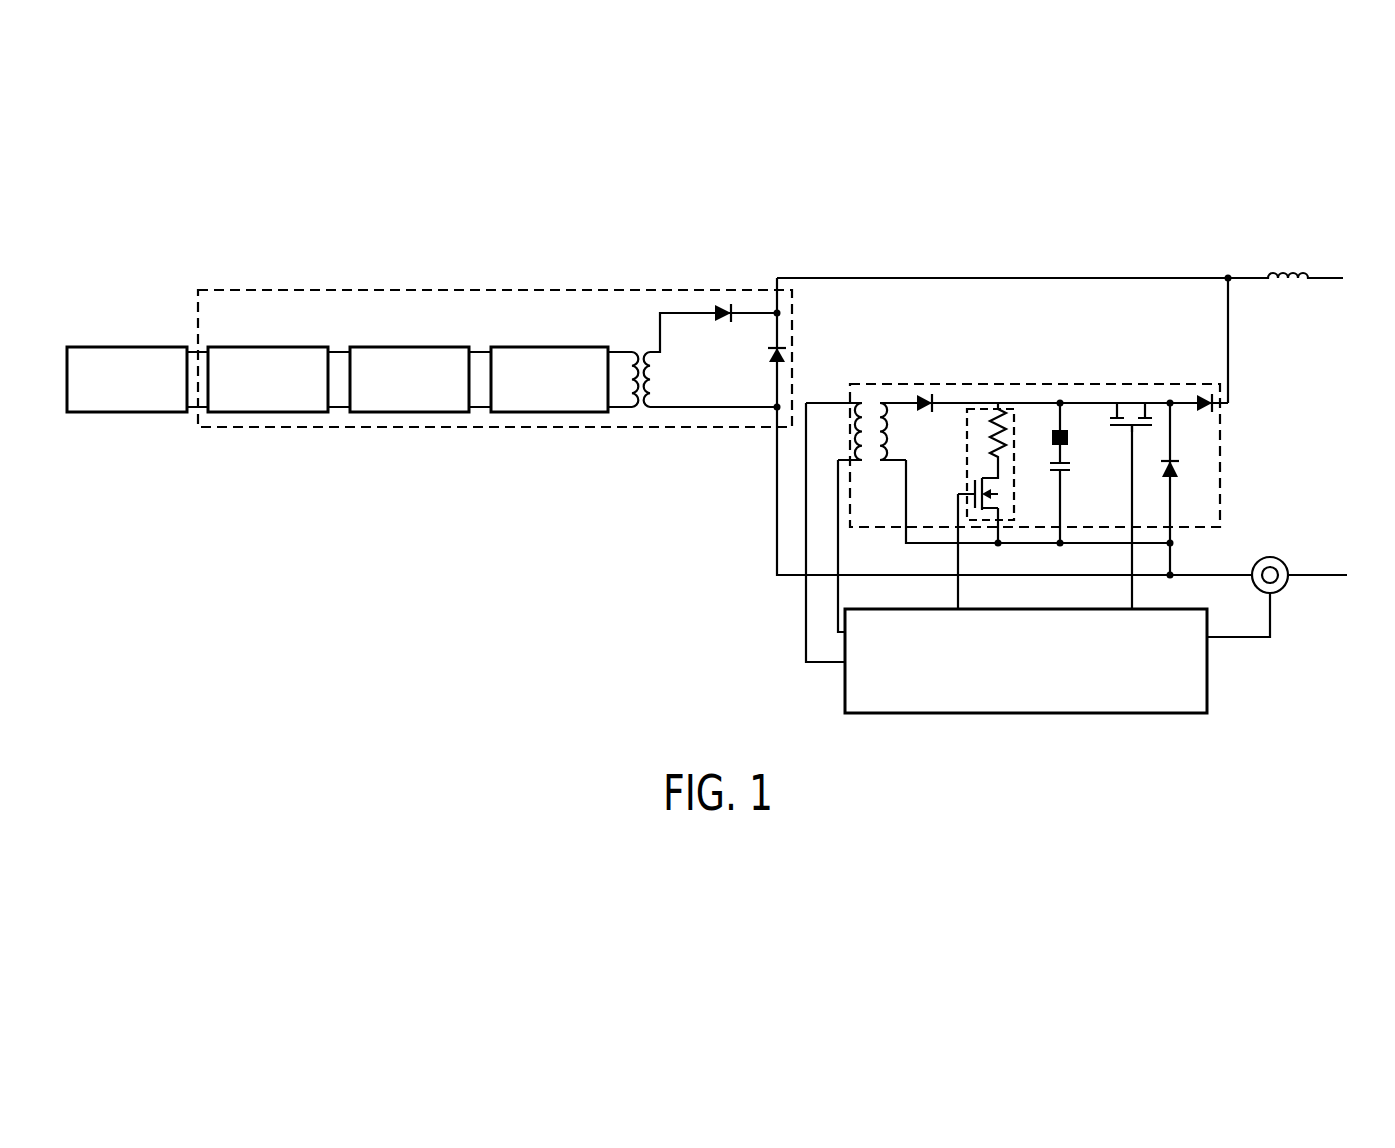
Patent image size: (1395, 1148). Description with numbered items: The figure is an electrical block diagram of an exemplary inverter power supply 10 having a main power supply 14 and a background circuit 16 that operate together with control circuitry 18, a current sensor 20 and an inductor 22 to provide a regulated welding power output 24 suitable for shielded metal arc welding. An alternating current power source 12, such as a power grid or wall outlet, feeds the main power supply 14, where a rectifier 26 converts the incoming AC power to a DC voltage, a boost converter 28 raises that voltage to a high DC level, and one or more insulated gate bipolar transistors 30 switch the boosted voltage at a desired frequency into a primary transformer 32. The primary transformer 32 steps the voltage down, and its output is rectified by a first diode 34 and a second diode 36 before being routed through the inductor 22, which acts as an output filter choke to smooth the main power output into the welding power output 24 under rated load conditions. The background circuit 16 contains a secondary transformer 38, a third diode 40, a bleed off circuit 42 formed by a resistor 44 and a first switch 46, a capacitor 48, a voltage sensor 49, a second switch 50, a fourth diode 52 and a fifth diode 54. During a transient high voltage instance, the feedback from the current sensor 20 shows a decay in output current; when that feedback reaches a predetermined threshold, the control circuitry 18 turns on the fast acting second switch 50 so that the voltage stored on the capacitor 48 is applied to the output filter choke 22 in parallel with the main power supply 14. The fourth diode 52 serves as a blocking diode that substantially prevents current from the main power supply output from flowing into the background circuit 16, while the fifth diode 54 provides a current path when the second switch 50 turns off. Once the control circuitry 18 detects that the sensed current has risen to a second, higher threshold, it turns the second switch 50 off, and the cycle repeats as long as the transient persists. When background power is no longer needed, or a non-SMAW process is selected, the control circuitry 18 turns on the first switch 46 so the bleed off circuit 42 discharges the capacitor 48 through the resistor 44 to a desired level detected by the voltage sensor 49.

The inverter power supply 10 is at (820, 231).
The alternating current (AC) power source 12 is at (130, 346).
The main power supply 14 is at (496, 291).
The background circuit 16 is at (1221, 456).
The control circuitry 18 is at (1208, 662).
The current sensor 20 is at (1286, 561).
The inductor 22 is at (1284, 272).
The welding power output 24 is at (1317, 379).
The rectifier 26 is at (270, 346).
The boost converter 28 is at (410, 346).
The insulated gate bipolar transistors 30 is at (550, 346).
The primary transformer 32 is at (645, 343).
The first diode 34 is at (722, 307).
The second diode 36 is at (786, 354).
The secondary transformer 38 is at (870, 402).
The third diode 40 is at (925, 400).
The bleed off circuit 42 is at (992, 406).
The resistor 44 is at (995, 426).
The first switch 46 is at (992, 498).
The capacitor 48 is at (1066, 471).
The voltage sensor 49 is at (1067, 436).
The second switch 50 is at (1130, 401).
The fourth diode 52 is at (1203, 398).
The fifth diode 54 is at (1180, 471).